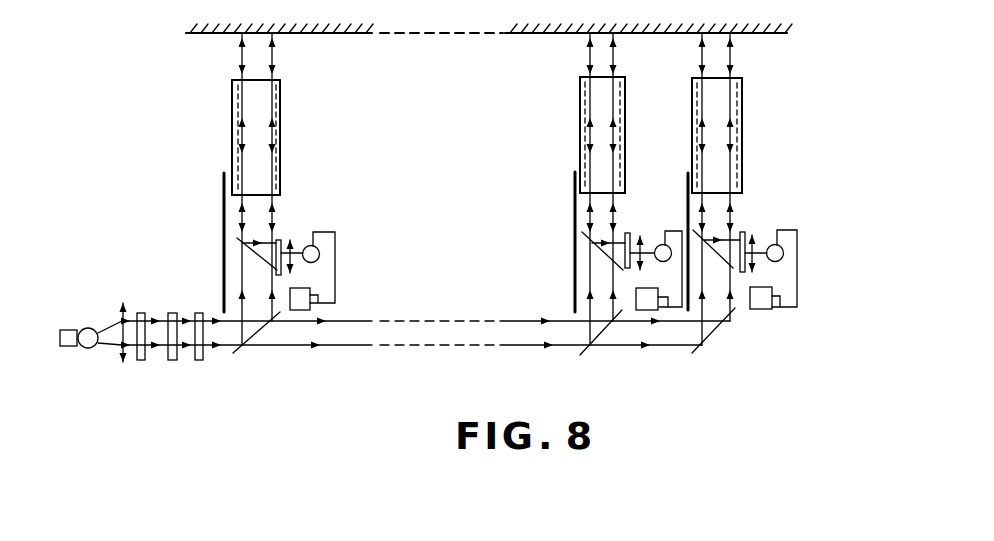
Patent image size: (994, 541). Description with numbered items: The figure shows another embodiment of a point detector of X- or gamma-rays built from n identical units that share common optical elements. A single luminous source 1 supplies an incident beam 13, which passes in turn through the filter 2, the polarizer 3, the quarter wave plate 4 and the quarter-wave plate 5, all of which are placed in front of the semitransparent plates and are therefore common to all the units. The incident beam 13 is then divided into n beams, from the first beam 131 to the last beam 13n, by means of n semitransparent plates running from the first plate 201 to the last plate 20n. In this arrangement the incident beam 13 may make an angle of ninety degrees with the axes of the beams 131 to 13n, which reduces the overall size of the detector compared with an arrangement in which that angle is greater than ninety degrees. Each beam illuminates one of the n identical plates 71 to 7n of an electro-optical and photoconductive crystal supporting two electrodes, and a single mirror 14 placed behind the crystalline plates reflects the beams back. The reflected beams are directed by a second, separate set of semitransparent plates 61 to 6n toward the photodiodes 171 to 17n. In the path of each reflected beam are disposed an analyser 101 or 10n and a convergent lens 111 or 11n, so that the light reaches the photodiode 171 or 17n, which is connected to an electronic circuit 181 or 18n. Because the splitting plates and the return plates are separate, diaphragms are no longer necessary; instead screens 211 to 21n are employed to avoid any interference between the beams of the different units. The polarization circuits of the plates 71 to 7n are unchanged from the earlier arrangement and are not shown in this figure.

The luminous source 1 is at (90, 327).
The filter 2 is at (121, 312).
The polarizer 3 is at (173, 207).
The quarter wave plate 4 is at (172, 312).
The quarter-wave plate 5 is at (178, 400).
The incident luminous beam 13 is at (113, 348).
The mirror 14 is at (196, 34).
The semitransparent plate 201 is at (238, 355).
The screen 211 is at (223, 178).
The luminous beam 131 is at (253, 276).
The plate of electro-optical and photoconductive crystal 71 is at (258, 140).
The semitransparent plate 61 is at (238, 245).
The analyser 101 is at (278, 241).
The convergent lens 111 is at (293, 242).
The photodiode 171 is at (308, 244).
The electronic circuit 181 is at (311, 299).
The screen 21n is at (687, 176).
The luminous beam 13n is at (718, 307).
The plate of electro-optical and photoconductive crystal 7n is at (717, 127).
The semitransparent plate 6n is at (692, 232).
The analyser 10n is at (803, 153).
The convergent lens 11n is at (756, 238).
The photodiode 17n is at (768, 243).
The electronic circuit 18n is at (758, 309).
The semitransparent plate 20n is at (692, 353).